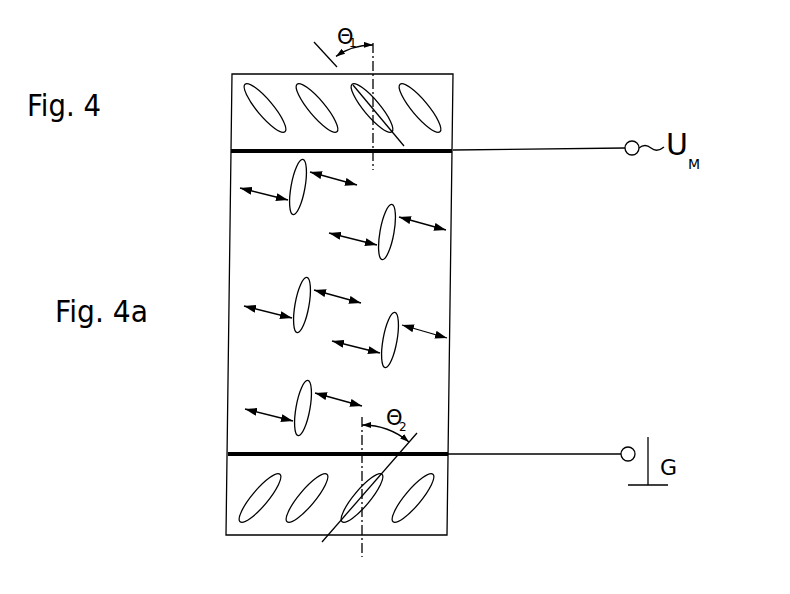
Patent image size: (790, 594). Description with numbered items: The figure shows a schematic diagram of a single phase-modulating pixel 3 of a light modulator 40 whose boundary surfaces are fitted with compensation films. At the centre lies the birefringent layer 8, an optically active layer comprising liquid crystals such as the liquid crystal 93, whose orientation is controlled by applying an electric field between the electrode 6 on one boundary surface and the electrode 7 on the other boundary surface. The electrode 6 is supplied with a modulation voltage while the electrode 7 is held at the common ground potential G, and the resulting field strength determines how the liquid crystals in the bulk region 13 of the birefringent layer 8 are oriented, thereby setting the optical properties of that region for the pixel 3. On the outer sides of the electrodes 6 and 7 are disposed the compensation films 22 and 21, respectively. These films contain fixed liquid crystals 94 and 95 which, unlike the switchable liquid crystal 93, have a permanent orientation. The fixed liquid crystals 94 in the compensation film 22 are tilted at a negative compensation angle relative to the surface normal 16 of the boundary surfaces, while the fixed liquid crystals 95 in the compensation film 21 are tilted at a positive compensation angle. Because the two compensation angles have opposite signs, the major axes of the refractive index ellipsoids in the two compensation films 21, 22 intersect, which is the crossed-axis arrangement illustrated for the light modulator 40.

In FIG. 4, the light modulator 40 is at (502, 68).
In FIG. 4, the pixel 3 is at (510, 213).
In FIG. 4, the electrode 6 is at (238, 151).
In FIG. 4A, the electrode 7 is at (238, 454).
In FIG. 4, the compensation film 22 is at (437, 93).
In FIG. 4A, the compensation film 21 is at (435, 508).
In FIG. 4, the fixed liquid crystal 94 is at (315, 108).
In FIG. 4A, the fixed liquid crystal 95 is at (289, 512).
In FIG. 4A, the liquid crystal 93 is at (387, 235).
In FIG. 4A, the bulk region 13 is at (413, 397).
In FIG. 4A, the birefringent layer 8 is at (411, 356).
In FIG. 4A, the surface normal 16 is at (359, 547).